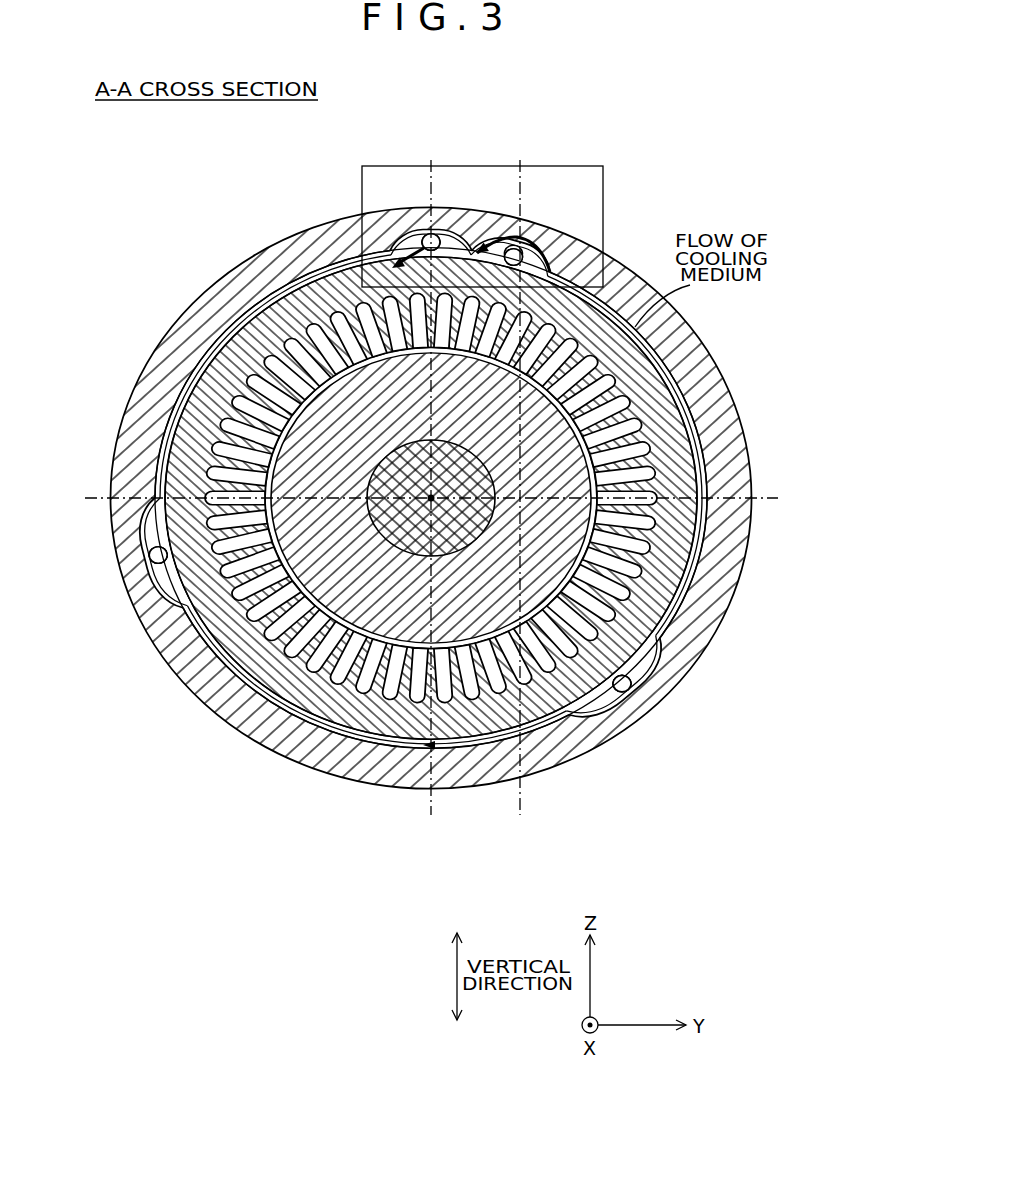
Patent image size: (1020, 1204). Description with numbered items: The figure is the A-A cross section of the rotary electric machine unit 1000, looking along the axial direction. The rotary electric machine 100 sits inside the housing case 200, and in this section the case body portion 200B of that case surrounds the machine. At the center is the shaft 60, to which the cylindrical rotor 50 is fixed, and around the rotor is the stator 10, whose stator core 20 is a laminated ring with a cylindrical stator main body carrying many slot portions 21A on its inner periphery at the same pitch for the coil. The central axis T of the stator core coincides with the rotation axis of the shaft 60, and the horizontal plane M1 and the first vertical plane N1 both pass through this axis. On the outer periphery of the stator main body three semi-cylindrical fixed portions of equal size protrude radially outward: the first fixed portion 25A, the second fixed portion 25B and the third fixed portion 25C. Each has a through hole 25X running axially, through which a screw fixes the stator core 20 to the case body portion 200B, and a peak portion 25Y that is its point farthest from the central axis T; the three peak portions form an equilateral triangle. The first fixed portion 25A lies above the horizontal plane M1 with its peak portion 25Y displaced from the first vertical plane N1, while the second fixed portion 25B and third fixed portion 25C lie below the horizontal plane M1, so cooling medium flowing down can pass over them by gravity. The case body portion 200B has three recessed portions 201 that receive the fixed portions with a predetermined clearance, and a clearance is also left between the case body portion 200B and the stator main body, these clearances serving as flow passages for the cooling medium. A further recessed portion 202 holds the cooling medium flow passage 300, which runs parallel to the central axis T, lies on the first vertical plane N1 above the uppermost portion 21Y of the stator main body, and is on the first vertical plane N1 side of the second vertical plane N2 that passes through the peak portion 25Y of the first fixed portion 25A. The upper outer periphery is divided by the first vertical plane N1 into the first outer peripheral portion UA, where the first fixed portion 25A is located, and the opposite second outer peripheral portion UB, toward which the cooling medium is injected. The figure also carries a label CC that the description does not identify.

The rotary electric machine unit 1000 is at (415, 505).
The rotary electric machine 100 is at (423, 574).
The stator 10 is at (431, 525).
The stator core 20 is at (222, 705).
The rotor 50 is at (290, 650).
The shaft 60 is at (365, 585).
The housing case 200 is at (431, 483).
The case body portion 200B is at (205, 298).
The recessed portion 201 is at (598, 240).
The recessed portion 202 is at (294, 280).
The slot portion 21A is at (613, 388).
The uppermost portion 21Y is at (405, 218).
The first fixed portion 25A is at (560, 252).
The second fixed portion 25B is at (635, 700).
The third fixed portion 25C is at (140, 547).
The through hole 25X is at (481, 236).
The peak portion 25Y is at (538, 222).
The cooling medium flow passage 300 is at (425, 243).
The central axis T is at (688, 574).
The first outer peripheral portion UA is at (650, 345).
The second outer peripheral portion UB is at (300, 280).
The center line CC is at (435, 168).
The horizontal plane M1 is at (448, 497).
The first vertical plane N1 is at (434, 671).
The second vertical plane N2 is at (524, 502).